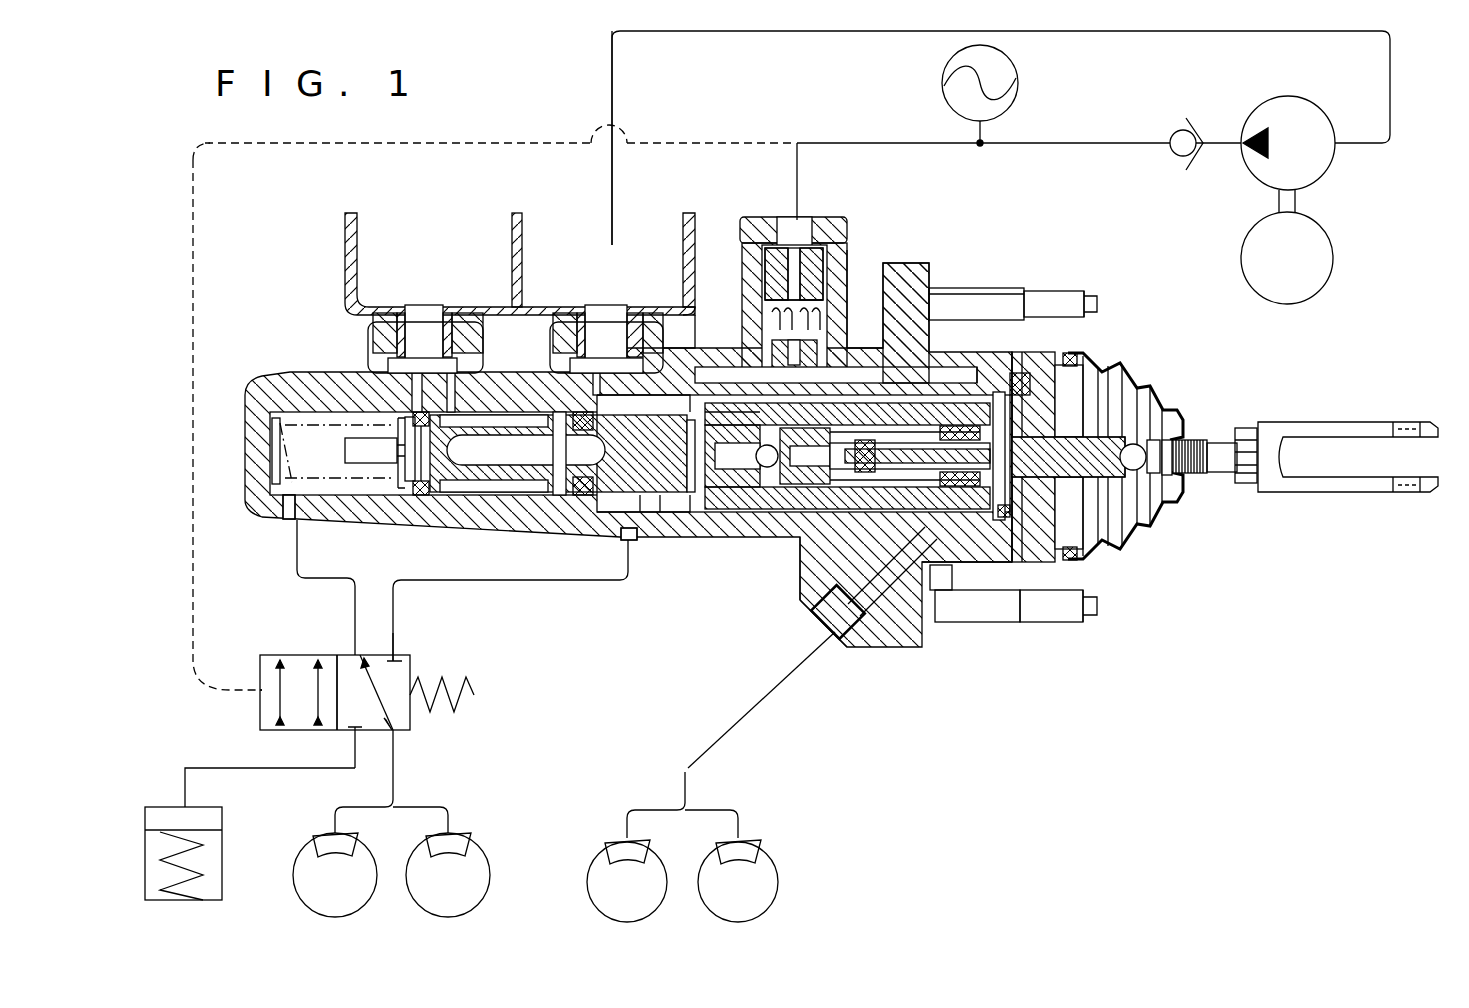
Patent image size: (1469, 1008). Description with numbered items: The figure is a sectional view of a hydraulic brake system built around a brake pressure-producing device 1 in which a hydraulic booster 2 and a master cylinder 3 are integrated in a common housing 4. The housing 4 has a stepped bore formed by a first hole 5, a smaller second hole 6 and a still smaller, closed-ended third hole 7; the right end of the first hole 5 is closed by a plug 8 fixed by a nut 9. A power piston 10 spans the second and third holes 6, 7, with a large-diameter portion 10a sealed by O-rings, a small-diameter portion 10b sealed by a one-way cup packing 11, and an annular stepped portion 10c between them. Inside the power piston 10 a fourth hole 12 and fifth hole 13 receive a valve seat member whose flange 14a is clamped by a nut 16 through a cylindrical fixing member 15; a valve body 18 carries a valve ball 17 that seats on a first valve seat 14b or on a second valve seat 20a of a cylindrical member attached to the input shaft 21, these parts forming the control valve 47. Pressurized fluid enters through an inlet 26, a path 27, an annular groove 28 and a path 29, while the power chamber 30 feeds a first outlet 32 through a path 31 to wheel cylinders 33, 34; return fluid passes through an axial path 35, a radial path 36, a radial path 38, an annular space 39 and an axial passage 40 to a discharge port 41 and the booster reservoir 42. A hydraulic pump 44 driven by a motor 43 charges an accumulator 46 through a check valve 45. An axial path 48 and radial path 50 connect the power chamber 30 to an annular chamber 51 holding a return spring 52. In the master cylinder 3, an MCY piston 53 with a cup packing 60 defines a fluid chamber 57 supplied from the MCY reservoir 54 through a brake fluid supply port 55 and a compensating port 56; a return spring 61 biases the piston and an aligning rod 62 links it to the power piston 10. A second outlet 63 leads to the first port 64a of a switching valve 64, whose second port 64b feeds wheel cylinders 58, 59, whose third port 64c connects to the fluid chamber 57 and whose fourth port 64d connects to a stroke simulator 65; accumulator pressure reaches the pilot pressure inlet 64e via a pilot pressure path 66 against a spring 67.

The brake pressure-producing device 1 is at (998, 672).
The hydraulic booster 2 is at (860, 300).
The master cylinder 3 is at (471, 539).
The housing 4 is at (718, 468).
The first hole 5 is at (1000, 563).
The second hole 6 is at (690, 468).
The third hole 7 is at (310, 427).
The plug 8 is at (1030, 623).
The nut 9 is at (1040, 552).
The power piston 10 is at (805, 562).
The large-diameter portion 10a is at (960, 372).
The small-diameter portion 10b is at (556, 498).
The annular stepped portion 10c is at (708, 542).
The cup packing 11 is at (582, 498).
The fourth hole 12 is at (880, 606).
The fifth hole 13 is at (670, 542).
The flange 14a is at (760, 415).
The first valve seat 14b is at (758, 510).
The cylindrical fixing member 15 is at (860, 368).
The nut 16 is at (935, 315).
The valve ball 17 is at (740, 507).
The valve body 18 is at (640, 542).
The second valve seat 20a is at (790, 508).
The input shaft 21 is at (1100, 475).
The inlet 26 is at (800, 218).
The path 27 is at (745, 395).
The annular groove 28 is at (840, 300).
The path 29 is at (768, 470).
The power chamber 30 is at (945, 563).
The path 31 is at (852, 626).
The first outlet 32 is at (832, 642).
The wheel cylinder 33 is at (748, 842).
The wheel cylinder 34 is at (620, 842).
The axial path 35 is at (975, 563).
The radial path 36 is at (1070, 362).
The radial path 38 is at (1018, 378).
The annular space 39 is at (1015, 372).
The axial passage 40 is at (905, 280).
The discharge port 41 is at (607, 367).
The booster reservoir 42 is at (555, 269).
The motor 43 is at (1315, 277).
The hydraulic pump 44 is at (1313, 172).
The check valve 45 is at (1182, 157).
The accumulator 46 is at (1012, 95).
The control valve 47 is at (745, 546).
The axial path 48 is at (720, 380).
The radial path 50 is at (668, 312).
The annular chamber 51 is at (650, 513).
The return spring 52 is at (522, 372).
The MCY piston 53 is at (460, 480).
The MCY reservoir 54 is at (413, 269).
The brake fluid supply port 55 is at (470, 362).
The compensating port 56 is at (405, 425).
The fluid chamber 57 is at (307, 447).
The wheel cylinder 58 is at (455, 838).
The wheel cylinder 59 is at (333, 838).
The cup packing 60 is at (418, 490).
The return spring 61 is at (286, 516).
The aligning rod 62 is at (513, 462).
The second outlet 63 is at (626, 550).
The switching valve 64 is at (260, 718).
The first port 64a is at (392, 647).
The second port 64b is at (395, 733).
The third port 64c is at (360, 663).
The fourth port 64d is at (350, 728).
The pilot pressure inlet 64e is at (260, 690).
The stroke simulator 65 is at (222, 812).
The pilot pressure path 66 is at (548, 140).
The spring 67 is at (474, 695).